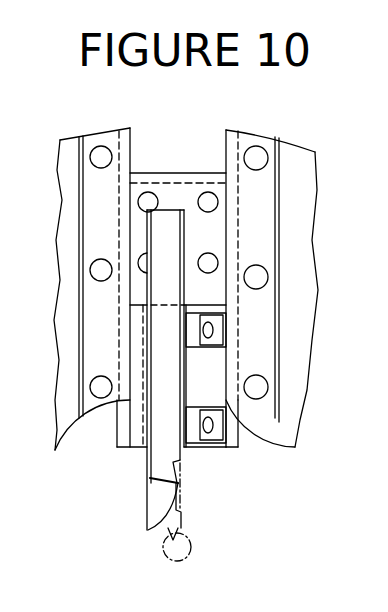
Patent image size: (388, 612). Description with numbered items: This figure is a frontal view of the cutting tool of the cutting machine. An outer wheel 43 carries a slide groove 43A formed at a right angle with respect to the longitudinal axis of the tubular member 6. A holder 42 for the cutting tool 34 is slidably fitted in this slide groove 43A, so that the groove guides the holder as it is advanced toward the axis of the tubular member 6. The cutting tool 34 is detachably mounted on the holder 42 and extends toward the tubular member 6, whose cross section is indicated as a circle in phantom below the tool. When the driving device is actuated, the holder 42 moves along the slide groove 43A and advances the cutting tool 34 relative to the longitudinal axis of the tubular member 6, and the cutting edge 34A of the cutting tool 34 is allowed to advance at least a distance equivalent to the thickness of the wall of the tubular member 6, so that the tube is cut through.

The outer wheel 43 is at (283, 175).
The slide groove 43A is at (225, 228).
The holder 42 is at (212, 295).
The cutting tool 34 is at (168, 453).
The cutting edge 34A is at (176, 502).
The tubular member 6 is at (191, 545).